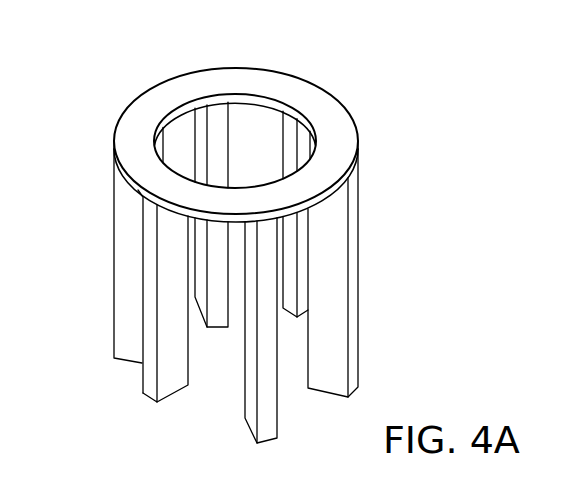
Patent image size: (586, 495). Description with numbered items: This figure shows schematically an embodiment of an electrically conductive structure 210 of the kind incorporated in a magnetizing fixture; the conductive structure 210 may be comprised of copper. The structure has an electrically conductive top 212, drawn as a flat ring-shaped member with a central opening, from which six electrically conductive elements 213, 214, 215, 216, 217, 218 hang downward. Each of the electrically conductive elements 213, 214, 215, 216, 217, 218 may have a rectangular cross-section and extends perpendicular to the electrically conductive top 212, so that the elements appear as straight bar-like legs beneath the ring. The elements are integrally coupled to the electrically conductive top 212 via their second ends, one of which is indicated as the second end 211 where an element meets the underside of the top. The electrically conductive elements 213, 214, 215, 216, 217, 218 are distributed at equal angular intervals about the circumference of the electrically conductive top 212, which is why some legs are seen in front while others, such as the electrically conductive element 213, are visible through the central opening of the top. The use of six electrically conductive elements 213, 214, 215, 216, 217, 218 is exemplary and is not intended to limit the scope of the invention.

The conductive structure 210 is at (363, 84).
The second end 211 is at (358, 178).
The electrically conductive top 212 is at (245, 67).
The electrically conductive element 213 is at (228, 132).
The electrically conductive element 214 is at (297, 319).
The electrically conductive element 215 is at (358, 231).
The electrically conductive element 216 is at (245, 399).
The electrically conductive element 217 is at (142, 378).
The electrically conductive element 218 is at (114, 258).